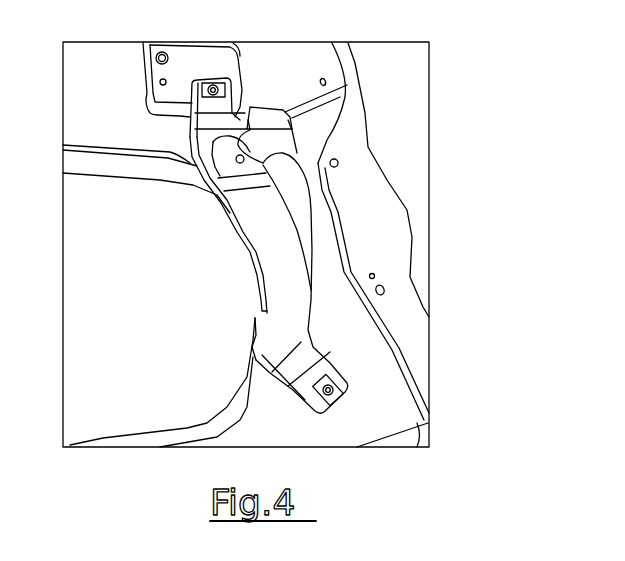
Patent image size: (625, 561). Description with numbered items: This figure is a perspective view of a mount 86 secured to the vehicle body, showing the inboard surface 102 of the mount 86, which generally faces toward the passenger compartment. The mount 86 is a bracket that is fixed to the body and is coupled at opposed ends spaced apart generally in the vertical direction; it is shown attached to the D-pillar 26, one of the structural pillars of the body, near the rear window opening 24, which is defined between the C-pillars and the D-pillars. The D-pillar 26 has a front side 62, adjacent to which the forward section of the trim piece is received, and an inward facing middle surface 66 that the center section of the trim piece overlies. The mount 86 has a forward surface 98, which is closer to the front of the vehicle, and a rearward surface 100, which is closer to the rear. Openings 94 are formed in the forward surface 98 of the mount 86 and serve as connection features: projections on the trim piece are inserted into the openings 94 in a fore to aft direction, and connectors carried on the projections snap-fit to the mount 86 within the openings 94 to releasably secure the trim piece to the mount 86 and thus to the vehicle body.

The rear window opening 24 is at (100, 413).
The D-pillar 26 is at (410, 162).
The front side of the D-pillar 62 is at (243, 388).
The inward facing middle surface 66 is at (367, 250).
The mount 86 is at (245, 261).
The openings 94 is at (227, 215).
The forward surface 98 is at (243, 236).
The rearward surface 100 is at (310, 303).
The inboard surface 102 is at (277, 235).